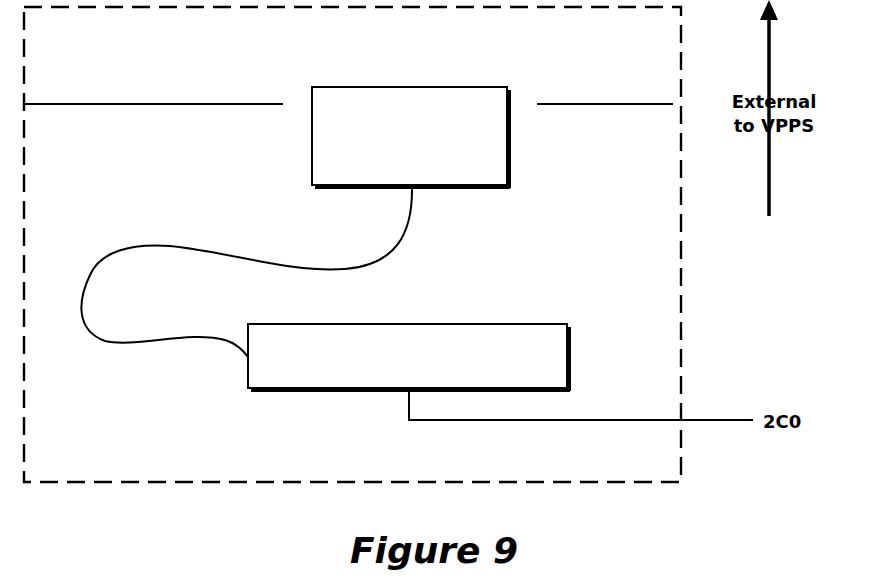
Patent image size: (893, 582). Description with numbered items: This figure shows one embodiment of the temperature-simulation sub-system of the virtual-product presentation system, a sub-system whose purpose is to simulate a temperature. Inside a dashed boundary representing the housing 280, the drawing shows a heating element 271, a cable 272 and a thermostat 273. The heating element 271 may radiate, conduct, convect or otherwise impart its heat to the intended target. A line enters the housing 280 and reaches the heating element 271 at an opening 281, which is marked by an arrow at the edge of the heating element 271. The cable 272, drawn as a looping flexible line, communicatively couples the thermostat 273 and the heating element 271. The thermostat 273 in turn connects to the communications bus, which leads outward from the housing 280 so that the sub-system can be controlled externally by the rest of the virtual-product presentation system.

The heating element 271 is at (411, 137).
The cable 272 is at (115, 252).
The thermostat 273 is at (409, 357).
The housing 280 is at (184, 104).
The opening 281 is at (297, 98).